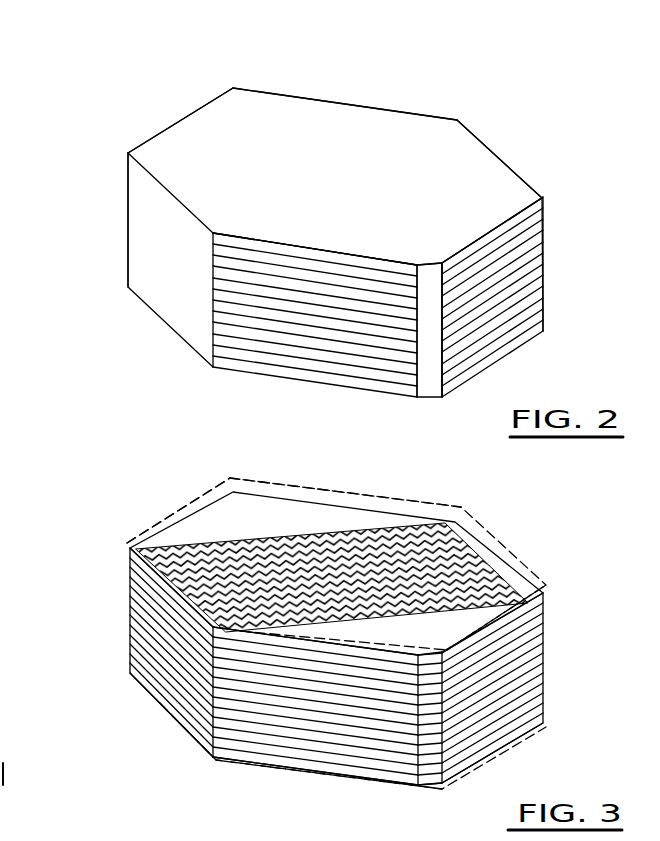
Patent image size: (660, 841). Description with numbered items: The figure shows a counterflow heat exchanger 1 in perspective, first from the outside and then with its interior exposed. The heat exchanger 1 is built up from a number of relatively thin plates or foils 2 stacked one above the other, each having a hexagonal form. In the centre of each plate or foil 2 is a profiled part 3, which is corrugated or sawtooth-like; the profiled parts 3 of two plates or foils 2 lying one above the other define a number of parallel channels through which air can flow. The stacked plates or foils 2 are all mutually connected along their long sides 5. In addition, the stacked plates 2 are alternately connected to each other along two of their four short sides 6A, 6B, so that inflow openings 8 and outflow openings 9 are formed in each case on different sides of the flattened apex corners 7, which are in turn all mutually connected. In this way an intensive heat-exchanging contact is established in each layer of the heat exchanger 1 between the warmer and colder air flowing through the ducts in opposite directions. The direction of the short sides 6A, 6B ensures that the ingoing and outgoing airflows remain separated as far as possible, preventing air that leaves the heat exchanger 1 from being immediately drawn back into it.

In FIG. 2, the heat exchanger 1 is at (520, 135).
In FIG. 3, the heat exchanger 1 is at (152, 737).
In FIG. 3, the plates or foils 2 is at (543, 612).
In FIG. 3, the profiled part 3 is at (305, 542).
In FIG. 2, the long sides 5 is at (153, 182).
In FIG. 3, the long sides 5 is at (517, 565).
In FIG. 2, the short side 6A is at (345, 99).
In FIG. 3, the short side 6A is at (357, 495).
In FIG. 2, the short side 6B is at (188, 115).
In FIG. 3, the short side 6B is at (190, 512).
In FIG. 2, the flattened apex corners 7 is at (233, 88).
In FIG. 3, the flattened apex corners 7 is at (430, 780).
In FIG. 2, the inflow openings 8 is at (520, 230).
In FIG. 2, the outflow openings 9 is at (222, 248).